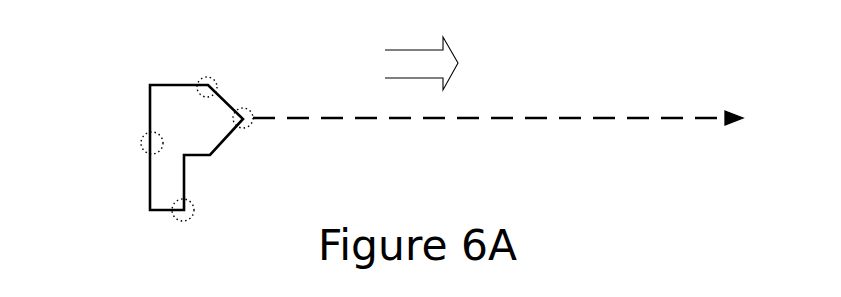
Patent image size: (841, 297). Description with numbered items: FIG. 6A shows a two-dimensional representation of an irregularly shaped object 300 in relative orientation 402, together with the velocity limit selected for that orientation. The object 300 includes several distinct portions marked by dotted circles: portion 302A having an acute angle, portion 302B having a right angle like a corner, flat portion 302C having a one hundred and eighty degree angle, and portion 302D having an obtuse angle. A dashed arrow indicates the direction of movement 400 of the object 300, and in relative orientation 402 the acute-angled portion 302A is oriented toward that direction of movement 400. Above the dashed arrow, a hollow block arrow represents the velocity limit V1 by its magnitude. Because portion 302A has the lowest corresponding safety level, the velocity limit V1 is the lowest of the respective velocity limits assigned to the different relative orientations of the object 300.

The object 300 is at (258, 78).
The portion having an acute angle 302A is at (253, 123).
The portion having a right angle 302B is at (194, 212).
The flat portion 302C is at (144, 156).
The portion having an obtuse angle 302D is at (216, 75).
The direction of movement 400 is at (612, 119).
The relative orientation 402 is at (60, 128).
The velocity limit V1 is at (458, 45).